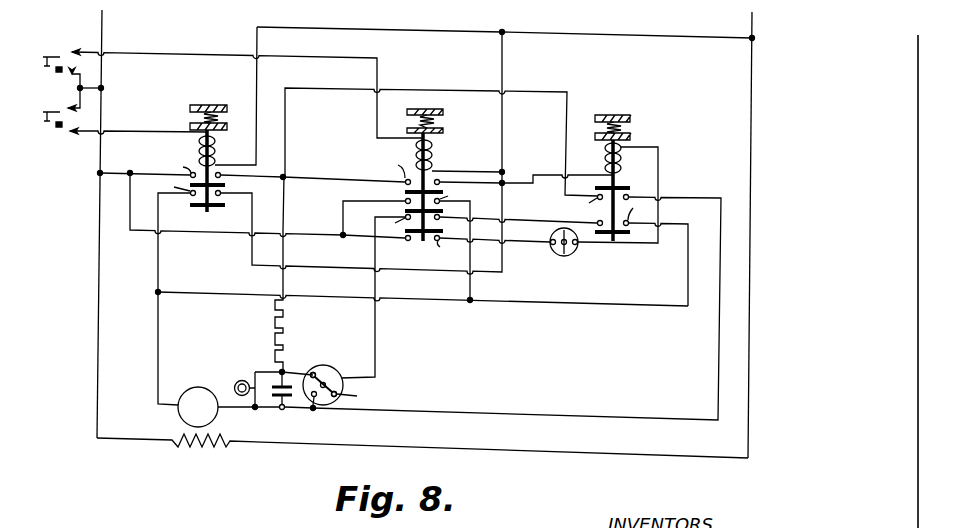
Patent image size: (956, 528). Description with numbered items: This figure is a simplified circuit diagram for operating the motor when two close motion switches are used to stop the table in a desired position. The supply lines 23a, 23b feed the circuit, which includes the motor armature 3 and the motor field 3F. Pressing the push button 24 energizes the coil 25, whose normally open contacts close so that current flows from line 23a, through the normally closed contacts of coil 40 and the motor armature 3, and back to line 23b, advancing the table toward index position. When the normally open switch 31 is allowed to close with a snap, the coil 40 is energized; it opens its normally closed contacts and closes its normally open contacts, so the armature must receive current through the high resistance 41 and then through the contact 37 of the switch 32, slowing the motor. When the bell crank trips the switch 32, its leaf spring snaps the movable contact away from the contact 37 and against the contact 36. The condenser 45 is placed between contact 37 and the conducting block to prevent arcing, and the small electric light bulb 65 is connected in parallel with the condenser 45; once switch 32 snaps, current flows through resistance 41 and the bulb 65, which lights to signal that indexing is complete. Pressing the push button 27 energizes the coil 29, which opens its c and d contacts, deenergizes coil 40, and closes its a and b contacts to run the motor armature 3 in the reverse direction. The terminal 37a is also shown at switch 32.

The supply line 23a is at (82, 221).
The supply line 23b is at (774, 235).
The push button 27 is at (226, 85).
The push button 24 is at (116, 101).
The coil 25 is at (300, 218).
The coil 29 is at (469, 243).
The coil 40 is at (517, 267).
The switch 31 is at (561, 254).
The high resistance 41 is at (275, 322).
The condenser 45 is at (275, 399).
The electric light bulb 65 is at (239, 382).
The motor armature 3 is at (247, 407).
The motor field 3F is at (180, 441).
The switch 32 is at (326, 366).
The contact 37 is at (311, 371).
The contact 36 is at (341, 377).
The switch contact 37a is at (363, 395).